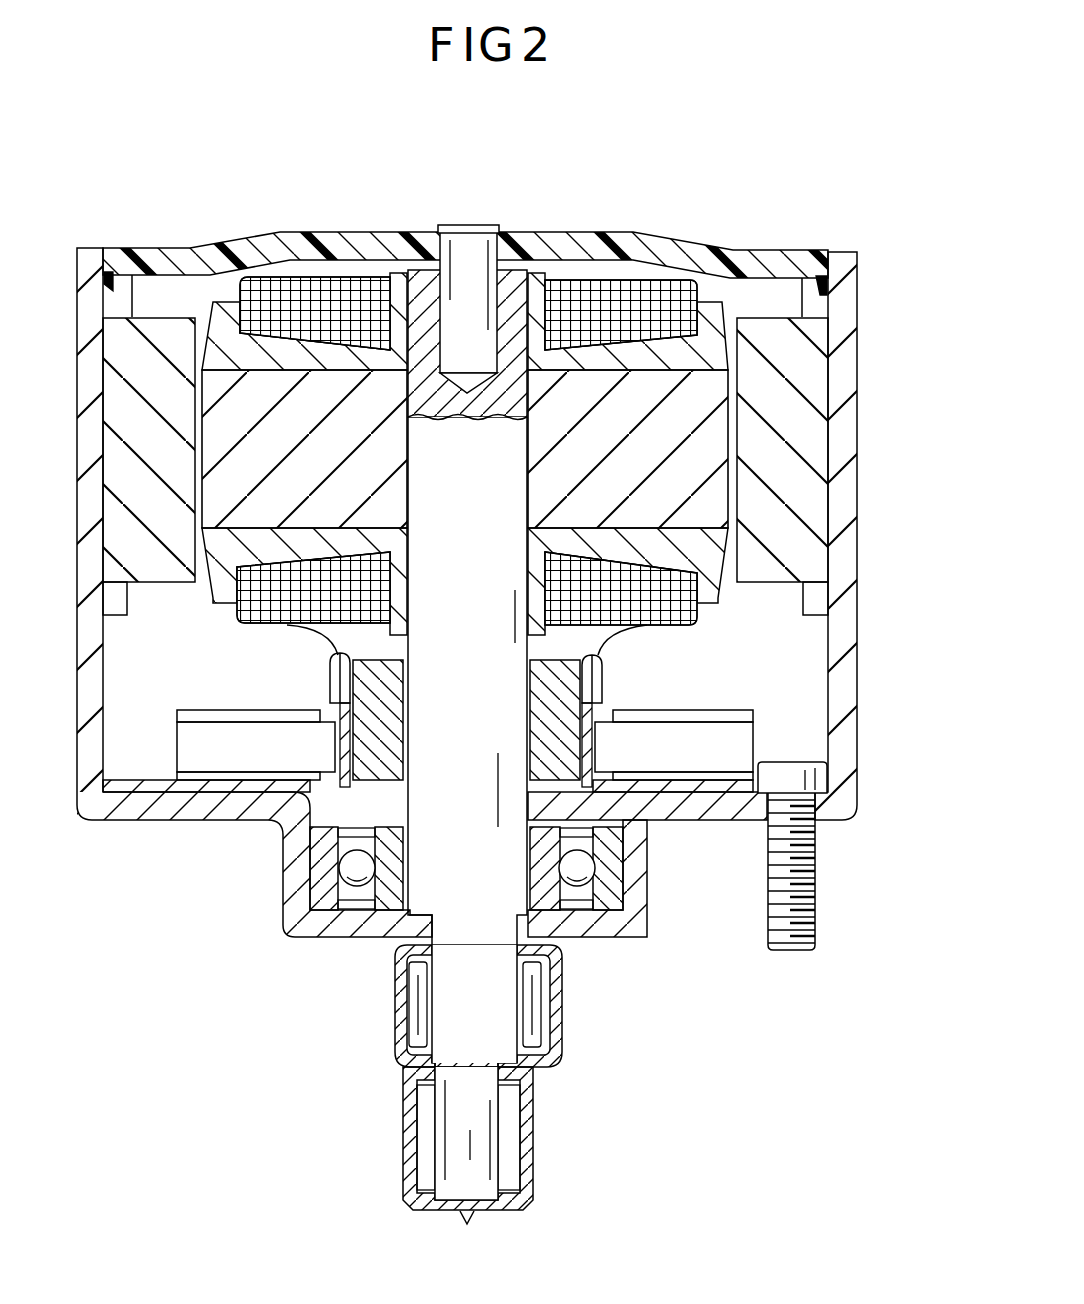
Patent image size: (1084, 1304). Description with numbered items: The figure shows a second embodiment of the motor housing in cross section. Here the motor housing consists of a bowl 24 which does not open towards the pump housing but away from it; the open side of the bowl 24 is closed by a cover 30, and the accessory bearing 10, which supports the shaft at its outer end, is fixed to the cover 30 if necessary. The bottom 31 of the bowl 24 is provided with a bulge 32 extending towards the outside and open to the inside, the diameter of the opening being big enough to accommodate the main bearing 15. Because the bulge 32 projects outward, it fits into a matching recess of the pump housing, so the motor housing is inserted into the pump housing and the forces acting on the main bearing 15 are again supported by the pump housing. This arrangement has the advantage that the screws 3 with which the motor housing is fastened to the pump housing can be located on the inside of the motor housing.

The screws 3 is at (817, 906).
The accessory bearing 10 is at (467, 270).
The main bearing 15 is at (315, 870).
The bowl 24 is at (857, 508).
The cover 30 is at (728, 258).
The bottom 31 is at (730, 814).
The bulge 32 is at (640, 913).